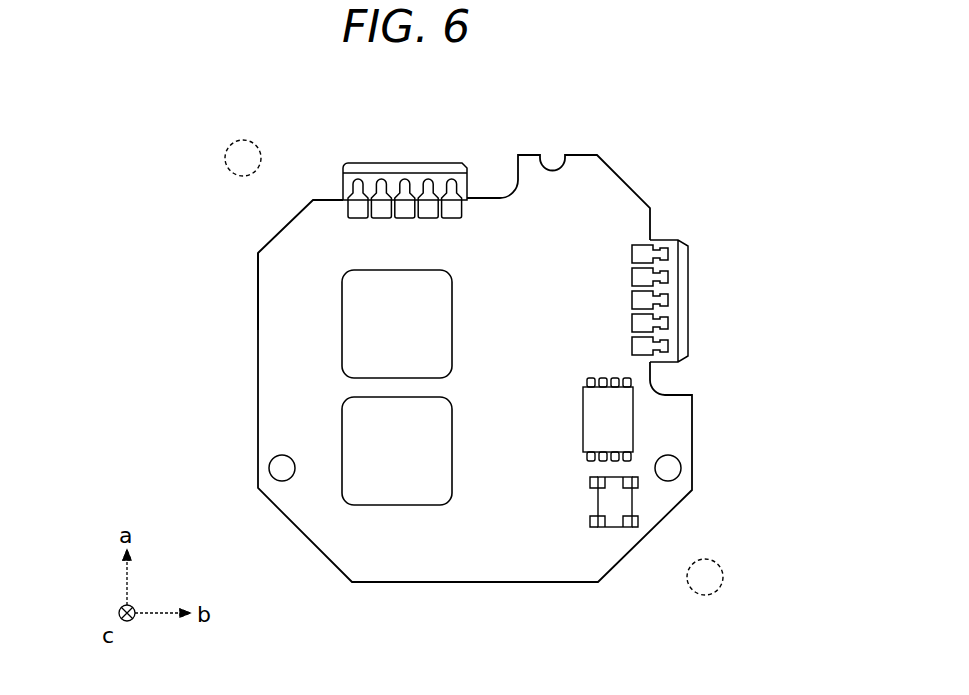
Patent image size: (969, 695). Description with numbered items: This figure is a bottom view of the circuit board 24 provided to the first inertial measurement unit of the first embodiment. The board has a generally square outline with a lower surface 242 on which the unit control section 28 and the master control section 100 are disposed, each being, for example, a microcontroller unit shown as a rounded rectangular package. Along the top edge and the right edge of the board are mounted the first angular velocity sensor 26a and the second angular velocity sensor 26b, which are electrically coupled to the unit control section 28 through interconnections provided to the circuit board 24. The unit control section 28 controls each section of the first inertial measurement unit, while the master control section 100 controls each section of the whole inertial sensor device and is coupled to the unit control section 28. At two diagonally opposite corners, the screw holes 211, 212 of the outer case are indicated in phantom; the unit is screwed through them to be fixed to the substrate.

The circuit board 24 is at (642, 195).
The first angular velocity sensor 26a is at (393, 177).
The second angular velocity sensor 26b is at (668, 288).
The unit control section 28 is at (400, 483).
The master control section 100 is at (365, 347).
The screw hole 211 is at (712, 565).
The screw hole 212 is at (243, 140).
The lower surface 242 is at (290, 303).